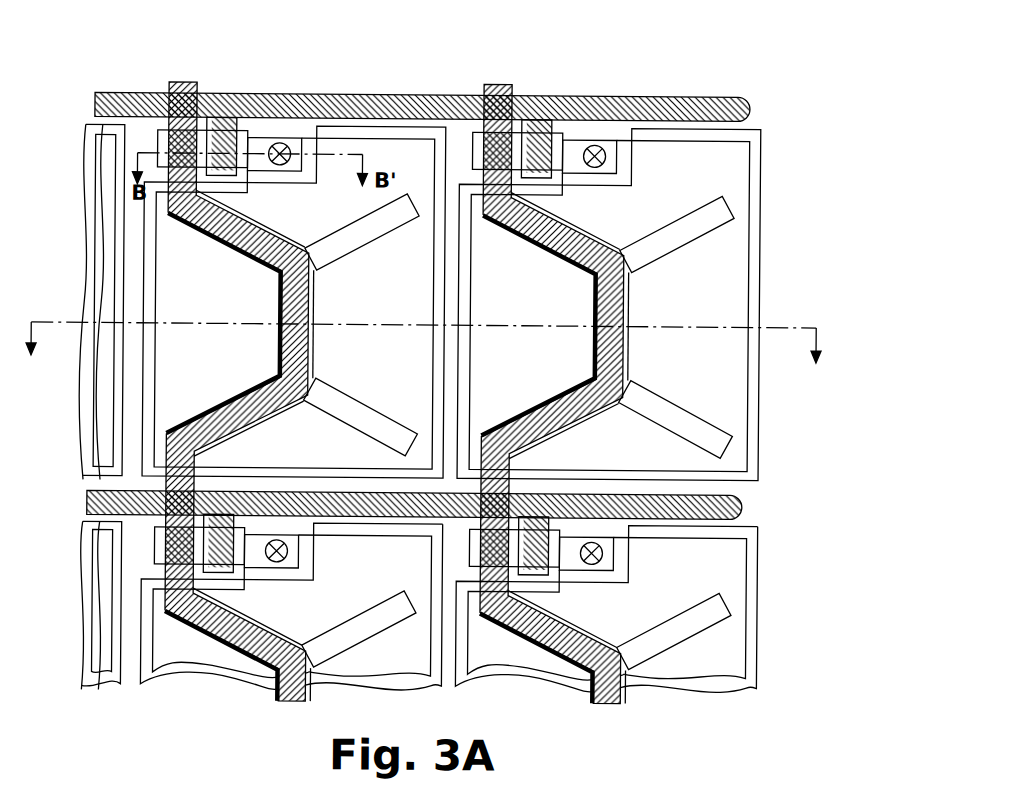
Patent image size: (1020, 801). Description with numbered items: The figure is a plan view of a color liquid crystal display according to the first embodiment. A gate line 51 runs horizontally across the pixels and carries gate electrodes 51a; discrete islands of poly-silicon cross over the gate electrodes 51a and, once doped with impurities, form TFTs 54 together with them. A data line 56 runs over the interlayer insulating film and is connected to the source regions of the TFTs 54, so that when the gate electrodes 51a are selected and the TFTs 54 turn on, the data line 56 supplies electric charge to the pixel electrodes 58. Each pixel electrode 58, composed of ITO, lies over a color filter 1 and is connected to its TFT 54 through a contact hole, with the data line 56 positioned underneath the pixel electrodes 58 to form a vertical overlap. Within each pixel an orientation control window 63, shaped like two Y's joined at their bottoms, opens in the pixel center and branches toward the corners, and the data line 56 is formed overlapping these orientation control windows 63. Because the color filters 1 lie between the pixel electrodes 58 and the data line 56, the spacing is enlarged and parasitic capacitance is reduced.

The color filter 1 is at (150, 372).
The gate line 51 is at (752, 105).
The gate electrode 51a is at (224, 92).
The TFT 54 is at (265, 89).
The data line 56 is at (186, 82).
The pixel electrode 58 is at (737, 415).
The orientation control window 63 is at (688, 246).